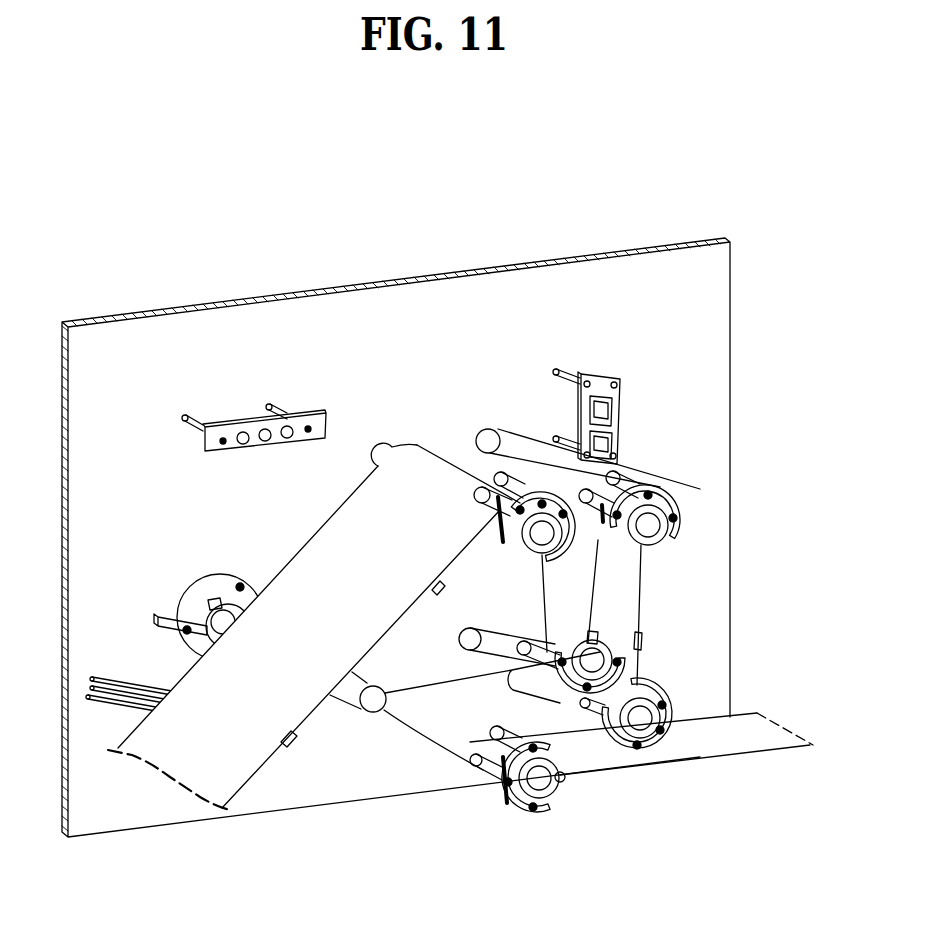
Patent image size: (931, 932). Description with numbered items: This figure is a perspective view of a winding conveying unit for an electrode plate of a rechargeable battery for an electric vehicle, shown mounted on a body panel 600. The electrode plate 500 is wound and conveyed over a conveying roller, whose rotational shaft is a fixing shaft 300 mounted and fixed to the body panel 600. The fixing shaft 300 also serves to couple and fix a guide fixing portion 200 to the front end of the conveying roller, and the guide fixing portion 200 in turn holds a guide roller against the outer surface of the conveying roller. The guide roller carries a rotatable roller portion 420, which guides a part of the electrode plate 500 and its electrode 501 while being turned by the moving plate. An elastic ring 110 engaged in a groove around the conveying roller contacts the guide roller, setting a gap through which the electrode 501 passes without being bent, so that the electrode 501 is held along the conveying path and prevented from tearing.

The elastic ring 110 is at (623, 477).
The guide fixing portion 200 is at (672, 476).
The fixing shaft 300 is at (390, 438).
The roller portion 420 is at (515, 474).
The electrode plate 500 is at (352, 538).
The electrode 501 is at (437, 592).
The body panel 600 is at (540, 288).